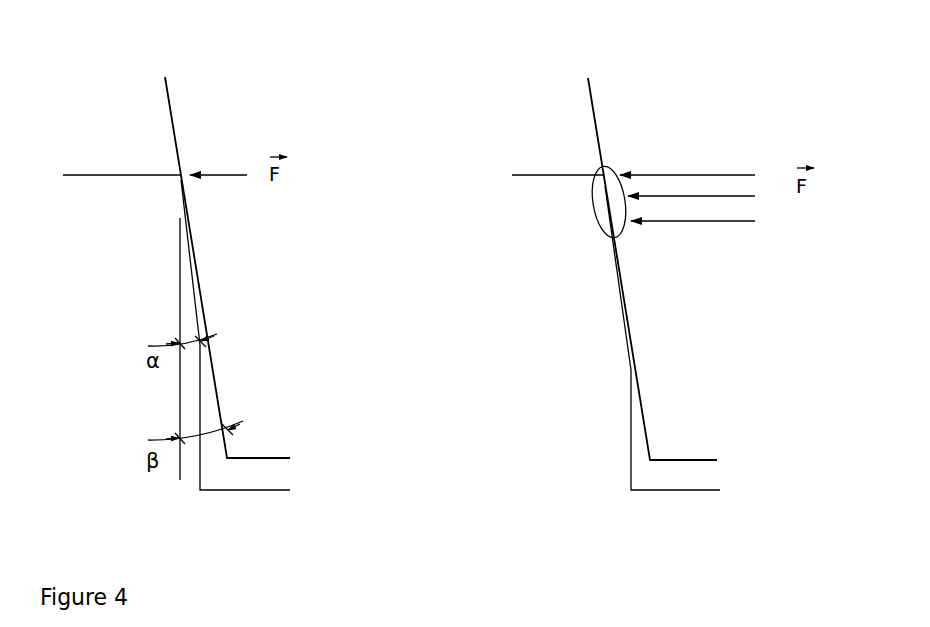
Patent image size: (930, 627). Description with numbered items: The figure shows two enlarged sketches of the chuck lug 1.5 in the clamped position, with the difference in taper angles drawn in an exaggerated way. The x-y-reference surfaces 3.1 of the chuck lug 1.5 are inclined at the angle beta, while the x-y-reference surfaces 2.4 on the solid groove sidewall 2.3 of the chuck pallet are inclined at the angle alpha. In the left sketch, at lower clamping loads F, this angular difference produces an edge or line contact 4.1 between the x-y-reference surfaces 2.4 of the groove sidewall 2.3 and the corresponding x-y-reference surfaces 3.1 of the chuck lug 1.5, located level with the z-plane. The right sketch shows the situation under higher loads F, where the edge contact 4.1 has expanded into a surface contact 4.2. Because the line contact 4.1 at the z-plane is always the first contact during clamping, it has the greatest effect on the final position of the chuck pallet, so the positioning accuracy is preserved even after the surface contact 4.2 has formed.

The chuck lug 1.5 is at (300, 412).
The solid groove sidewall 2.3 is at (124, 281).
The x-y-reference surfaces of the chuck pallet 2.4 is at (191, 297).
The x-y-reference surfaces of the chuck lug 3.1 is at (216, 354).
The edge contact 4.1 is at (189, 165).
The surface contact 4.2 is at (592, 213).